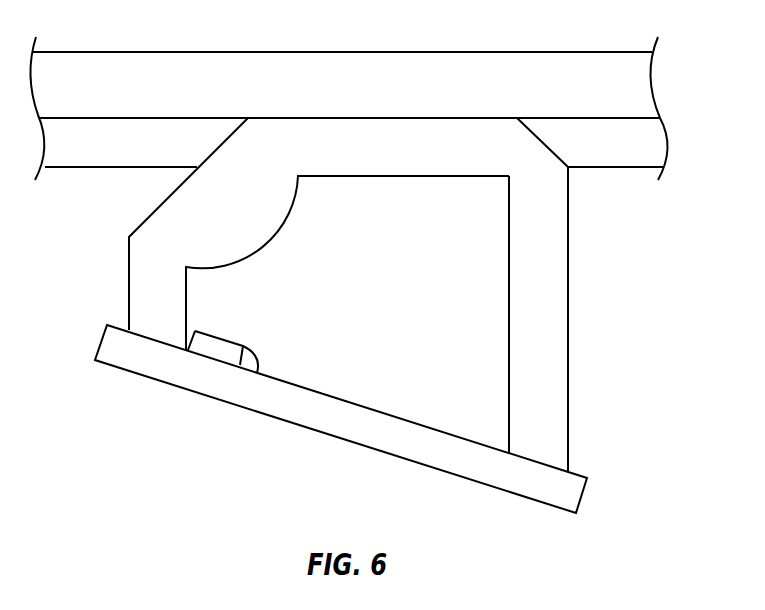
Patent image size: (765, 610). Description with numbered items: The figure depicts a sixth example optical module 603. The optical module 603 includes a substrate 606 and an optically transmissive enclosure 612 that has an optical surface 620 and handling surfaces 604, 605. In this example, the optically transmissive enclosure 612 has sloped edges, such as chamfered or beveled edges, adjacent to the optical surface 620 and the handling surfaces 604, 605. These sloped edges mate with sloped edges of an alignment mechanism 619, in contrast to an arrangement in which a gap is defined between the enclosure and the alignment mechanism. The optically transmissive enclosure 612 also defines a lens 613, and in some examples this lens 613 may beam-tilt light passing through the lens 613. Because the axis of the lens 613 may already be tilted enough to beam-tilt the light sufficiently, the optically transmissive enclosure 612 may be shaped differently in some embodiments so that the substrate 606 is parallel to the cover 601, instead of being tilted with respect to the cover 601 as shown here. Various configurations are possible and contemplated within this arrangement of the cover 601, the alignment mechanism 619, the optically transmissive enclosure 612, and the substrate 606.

The cover 601 is at (648, 78).
The optical surface 620 is at (372, 118).
The alignment mechanism 619 is at (670, 136).
The optical module 603 is at (376, 296).
The handling surface 604 is at (567, 246).
The handling surface 605 is at (129, 268).
The lens 613 is at (270, 240).
The substrate 606 is at (423, 426).
The optically transmissive enclosure 612 is at (58, 240).